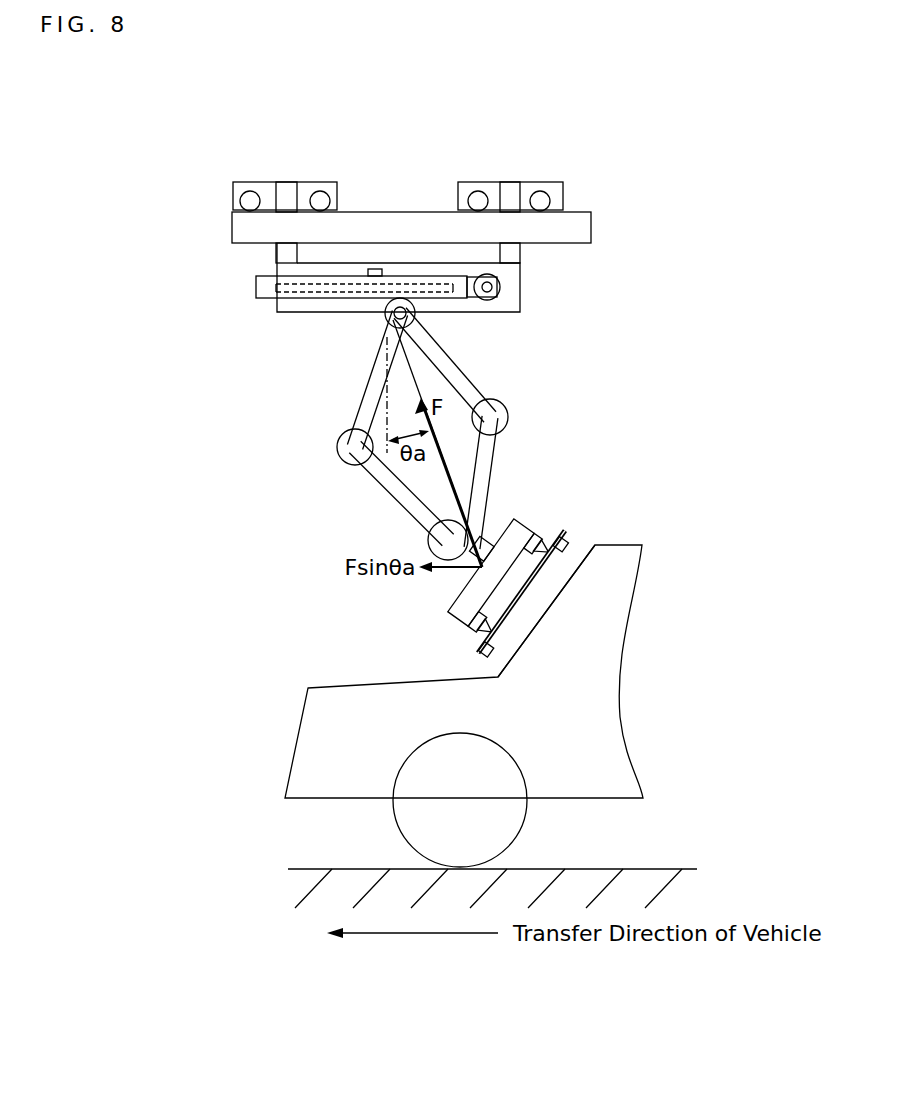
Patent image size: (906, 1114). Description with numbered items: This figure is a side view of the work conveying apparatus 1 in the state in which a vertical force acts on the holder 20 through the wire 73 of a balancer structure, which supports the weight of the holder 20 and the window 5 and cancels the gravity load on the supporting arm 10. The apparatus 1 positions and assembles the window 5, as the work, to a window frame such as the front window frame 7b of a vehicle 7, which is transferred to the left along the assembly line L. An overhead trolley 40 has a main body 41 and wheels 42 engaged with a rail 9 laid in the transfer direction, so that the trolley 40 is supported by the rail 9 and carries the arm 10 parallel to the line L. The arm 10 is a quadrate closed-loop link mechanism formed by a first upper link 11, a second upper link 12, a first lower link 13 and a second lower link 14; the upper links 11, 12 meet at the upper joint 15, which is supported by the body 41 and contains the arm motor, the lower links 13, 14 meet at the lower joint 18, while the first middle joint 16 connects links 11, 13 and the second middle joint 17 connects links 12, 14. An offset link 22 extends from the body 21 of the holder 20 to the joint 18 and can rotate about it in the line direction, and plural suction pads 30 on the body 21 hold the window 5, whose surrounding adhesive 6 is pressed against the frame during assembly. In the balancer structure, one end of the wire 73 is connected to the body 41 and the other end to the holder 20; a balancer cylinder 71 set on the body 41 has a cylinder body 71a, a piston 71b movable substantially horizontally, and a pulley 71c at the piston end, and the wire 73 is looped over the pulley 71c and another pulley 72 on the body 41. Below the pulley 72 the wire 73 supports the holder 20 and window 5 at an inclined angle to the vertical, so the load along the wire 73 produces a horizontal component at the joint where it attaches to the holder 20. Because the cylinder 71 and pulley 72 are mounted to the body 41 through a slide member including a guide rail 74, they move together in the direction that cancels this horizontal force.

The work conveying apparatus 1 is at (630, 312).
The window 5 is at (522, 590).
The adhesive 6 is at (567, 530).
The vehicle 7 is at (305, 690).
The front window frame 7b is at (584, 556).
The rail 9 is at (400, 210).
The supporting arm 10 is at (520, 392).
The first upper link 11 is at (370, 407).
The second upper link 12 is at (462, 383).
The first lower link 13 is at (390, 492).
The second lower link 14 is at (478, 457).
The upper joint 15 is at (386, 322).
The first middle joint 16 is at (348, 446).
The second middle joint 17 is at (500, 417).
The lower joint 18 is at (445, 540).
The holder 20 is at (452, 597).
The body of the holder 21 is at (436, 619).
The offset link 22 is at (487, 553).
The suction pad 30 is at (540, 543).
The overhead trolley 40 is at (266, 262).
The main body 41 is at (518, 267).
The wheels 42 is at (250, 203).
The balancer cylinder 71 is at (348, 302).
The cylinder body 71a is at (288, 292).
The piston 71b is at (445, 290).
The pulley 71c is at (500, 288).
The pulley 72 is at (416, 322).
The wire 73 is at (410, 370).
The guide rail 74 is at (272, 305).
The assembly line L is at (675, 869).